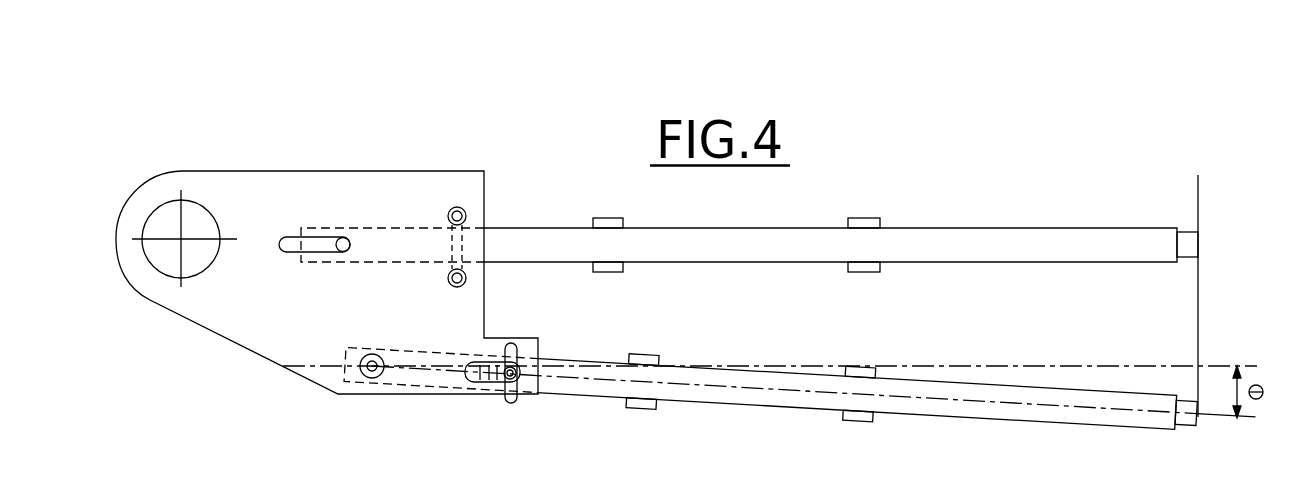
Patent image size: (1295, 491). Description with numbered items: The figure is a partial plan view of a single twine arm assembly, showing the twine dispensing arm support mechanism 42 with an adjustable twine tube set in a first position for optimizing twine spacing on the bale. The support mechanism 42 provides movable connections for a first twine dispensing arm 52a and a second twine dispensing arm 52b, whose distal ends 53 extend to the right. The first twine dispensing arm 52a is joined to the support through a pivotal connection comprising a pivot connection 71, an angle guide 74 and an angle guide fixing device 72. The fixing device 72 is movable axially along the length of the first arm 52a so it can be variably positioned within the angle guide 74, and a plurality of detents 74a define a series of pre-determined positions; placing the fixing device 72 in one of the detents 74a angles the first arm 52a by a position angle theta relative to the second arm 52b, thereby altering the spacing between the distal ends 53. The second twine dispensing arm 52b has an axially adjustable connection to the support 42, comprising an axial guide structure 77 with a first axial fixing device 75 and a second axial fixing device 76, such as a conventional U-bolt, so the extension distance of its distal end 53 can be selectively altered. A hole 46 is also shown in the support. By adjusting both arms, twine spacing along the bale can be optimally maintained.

The twine dispensing arm support mechanism 42 is at (404, 193).
The pivot hole 46 is at (185, 240).
The first twine dispensing arm 52a is at (900, 412).
The second twine dispensing arm 52b is at (932, 232).
The distal ends 53 is at (1199, 245).
The pivot connection 71 is at (372, 380).
The angle guide fixing device 72 is at (510, 403).
The angle guide 74 is at (494, 380).
The detents 74a is at (486, 357).
The first axial fixing device 75 is at (343, 238).
The second axial fixing device 76 is at (466, 216).
The axial guide structure 77 is at (283, 237).